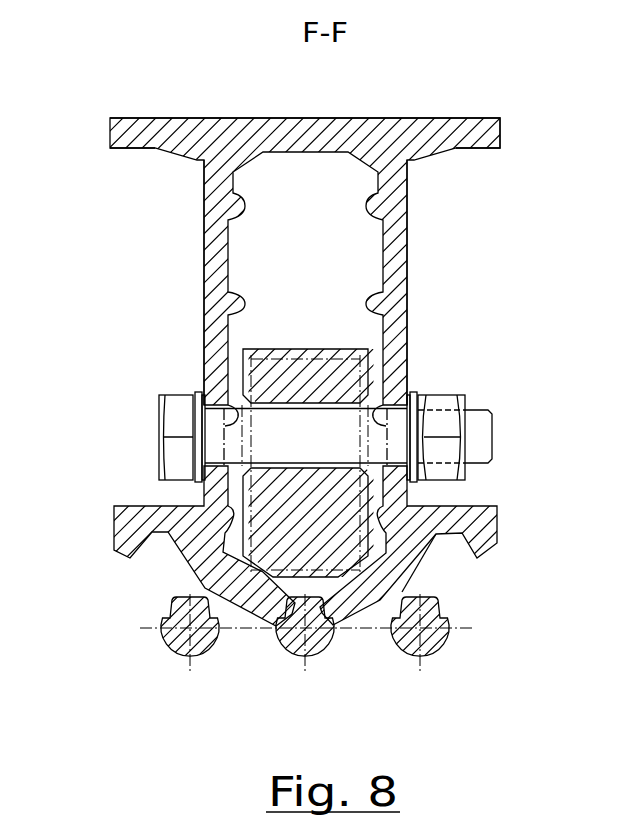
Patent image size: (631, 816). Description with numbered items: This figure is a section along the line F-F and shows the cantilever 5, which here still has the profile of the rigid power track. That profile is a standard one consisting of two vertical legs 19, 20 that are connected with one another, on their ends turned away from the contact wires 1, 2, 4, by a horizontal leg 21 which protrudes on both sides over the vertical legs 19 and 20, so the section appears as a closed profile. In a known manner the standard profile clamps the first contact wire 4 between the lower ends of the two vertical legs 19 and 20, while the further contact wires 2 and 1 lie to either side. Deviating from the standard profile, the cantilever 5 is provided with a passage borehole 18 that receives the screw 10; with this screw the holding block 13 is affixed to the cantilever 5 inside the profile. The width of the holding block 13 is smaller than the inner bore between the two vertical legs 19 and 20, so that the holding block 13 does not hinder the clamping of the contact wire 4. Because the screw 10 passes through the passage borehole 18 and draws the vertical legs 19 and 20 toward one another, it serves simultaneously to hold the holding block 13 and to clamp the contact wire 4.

The horizontal leg 21 is at (250, 136).
The cantilever 5 is at (217, 265).
The vertical leg 19 is at (206, 300).
The vertical leg 20 is at (404, 293).
The holding block 13 is at (256, 392).
The passage borehole 18 is at (213, 408).
The screw 10 is at (480, 437).
The contact wire 2 is at (189, 651).
The first contact wire 4 is at (303, 651).
The contact wire 1 is at (420, 652).